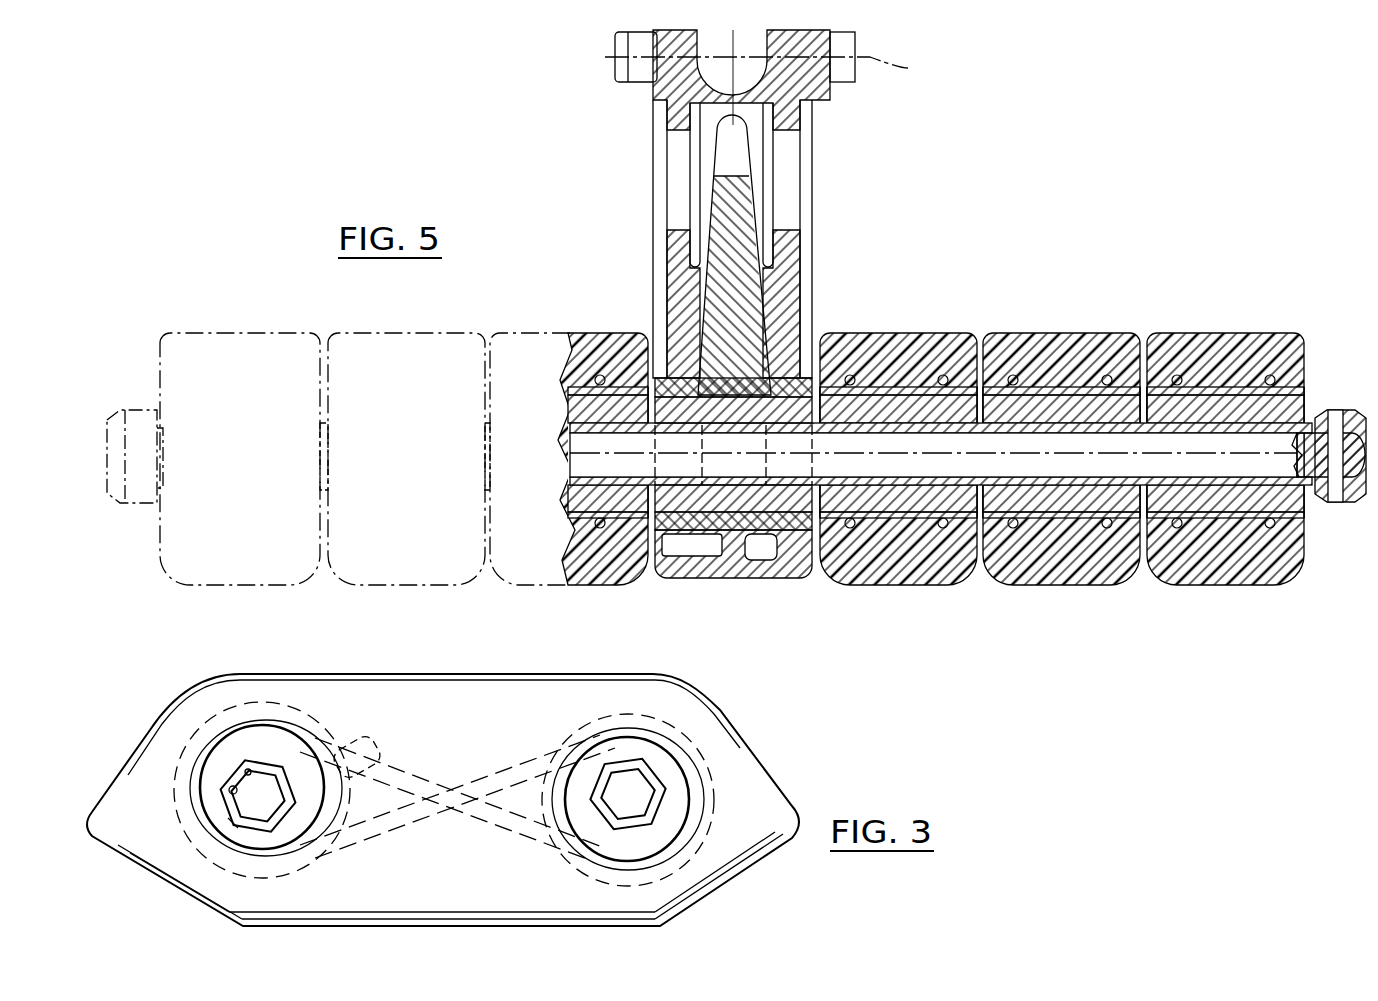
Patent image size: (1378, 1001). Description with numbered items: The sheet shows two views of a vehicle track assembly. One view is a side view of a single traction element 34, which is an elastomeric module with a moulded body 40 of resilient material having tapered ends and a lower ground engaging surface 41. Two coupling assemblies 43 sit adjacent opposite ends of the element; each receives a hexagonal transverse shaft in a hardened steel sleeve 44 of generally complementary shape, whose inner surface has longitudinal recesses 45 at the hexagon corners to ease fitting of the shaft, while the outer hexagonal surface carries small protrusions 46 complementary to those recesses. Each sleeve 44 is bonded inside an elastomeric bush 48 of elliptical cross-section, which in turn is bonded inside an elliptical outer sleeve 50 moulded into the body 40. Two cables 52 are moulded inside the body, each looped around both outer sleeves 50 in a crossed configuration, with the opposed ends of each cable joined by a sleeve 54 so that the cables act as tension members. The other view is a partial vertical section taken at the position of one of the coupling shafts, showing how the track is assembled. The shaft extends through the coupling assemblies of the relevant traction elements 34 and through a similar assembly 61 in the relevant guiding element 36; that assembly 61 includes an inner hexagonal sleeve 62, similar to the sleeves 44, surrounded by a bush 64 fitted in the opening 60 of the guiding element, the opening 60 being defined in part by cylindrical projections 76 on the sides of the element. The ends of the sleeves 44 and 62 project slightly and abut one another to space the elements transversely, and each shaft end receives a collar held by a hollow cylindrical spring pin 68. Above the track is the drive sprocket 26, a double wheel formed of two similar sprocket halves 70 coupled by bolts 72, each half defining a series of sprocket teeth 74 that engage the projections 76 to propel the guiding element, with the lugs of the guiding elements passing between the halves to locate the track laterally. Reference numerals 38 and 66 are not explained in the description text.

In FIG. 5, the drive sprocket 26 is at (818, 176).
In FIG. 5, the traction element 34 is at (1150, 592).
In FIG. 3, the traction element 34 is at (702, 686).
In FIG. 5, the guiding element 36 is at (772, 290).
In FIG. 5, the wheel body 38 is at (1172, 333).
In FIG. 3, the wheel body 38 is at (430, 674).
In FIG. 3, the moulded body 40 is at (738, 766).
In FIG. 3, the lower ground engaging surface 41 is at (445, 920).
In FIG. 3, the coupling assembly 43 is at (245, 718).
In FIG. 3, the hardened steel sleeve 44 is at (270, 770).
In FIG. 3, the longitudinal recess 45 is at (229, 790).
In FIG. 3, the protrusion 46 is at (230, 822).
In FIG. 3, the bush 48 is at (315, 780).
In FIG. 3, the outer sleeve 50 is at (320, 845).
In FIG. 5, the cable 52 is at (852, 528).
In FIG. 3, the cable 52 is at (492, 768).
In FIG. 3, the sleeve 54 is at (372, 745).
In FIG. 5, the transverse circular opening 60 is at (651, 372).
In FIG. 5, the assembly 61 is at (796, 342).
In FIG. 5, the inner hexagonal sleeve 62 is at (672, 540).
In FIG. 5, the bush 64 is at (735, 520).
In FIG. 5, the nut 66 is at (1352, 416).
In FIG. 5, the hollow cylindrical spring pin 68 is at (1337, 503).
In FIG. 5, the sprocket half 70 is at (695, 336).
In FIG. 5, the bolt 72 is at (772, 59).
In FIG. 5, the sprocket tooth 74 is at (640, 535).
In FIG. 5, the cylindrical projection 76 is at (576, 426).